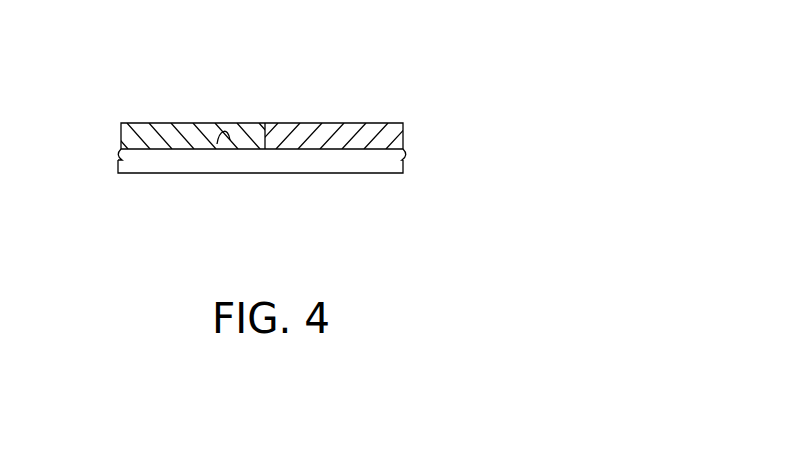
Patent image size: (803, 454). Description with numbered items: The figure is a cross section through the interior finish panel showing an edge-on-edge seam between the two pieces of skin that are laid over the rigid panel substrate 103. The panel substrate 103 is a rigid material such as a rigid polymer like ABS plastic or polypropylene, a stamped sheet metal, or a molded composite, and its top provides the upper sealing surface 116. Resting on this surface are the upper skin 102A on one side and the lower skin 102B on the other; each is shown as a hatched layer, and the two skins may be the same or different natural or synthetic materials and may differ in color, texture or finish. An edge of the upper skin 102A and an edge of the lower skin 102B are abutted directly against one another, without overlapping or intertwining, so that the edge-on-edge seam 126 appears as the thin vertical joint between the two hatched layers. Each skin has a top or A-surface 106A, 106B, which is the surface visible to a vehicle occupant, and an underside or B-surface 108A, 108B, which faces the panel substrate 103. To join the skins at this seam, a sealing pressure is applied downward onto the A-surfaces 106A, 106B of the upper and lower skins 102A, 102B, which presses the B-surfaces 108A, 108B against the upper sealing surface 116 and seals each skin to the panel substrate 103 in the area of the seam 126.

The lower skin 102B is at (162, 84).
The upper skin 102A is at (373, 85).
The A-surface of lower skin 106B is at (167, 123).
The A-surface of upper skin 106A is at (355, 123).
The edge-on-edge seam 126 is at (265, 125).
The B-surface of lower skin 108B is at (124, 161).
The B-surface of upper skin 108A is at (408, 162).
The upper sealing surface 116 is at (230, 140).
The panel substrate 103 is at (334, 186).